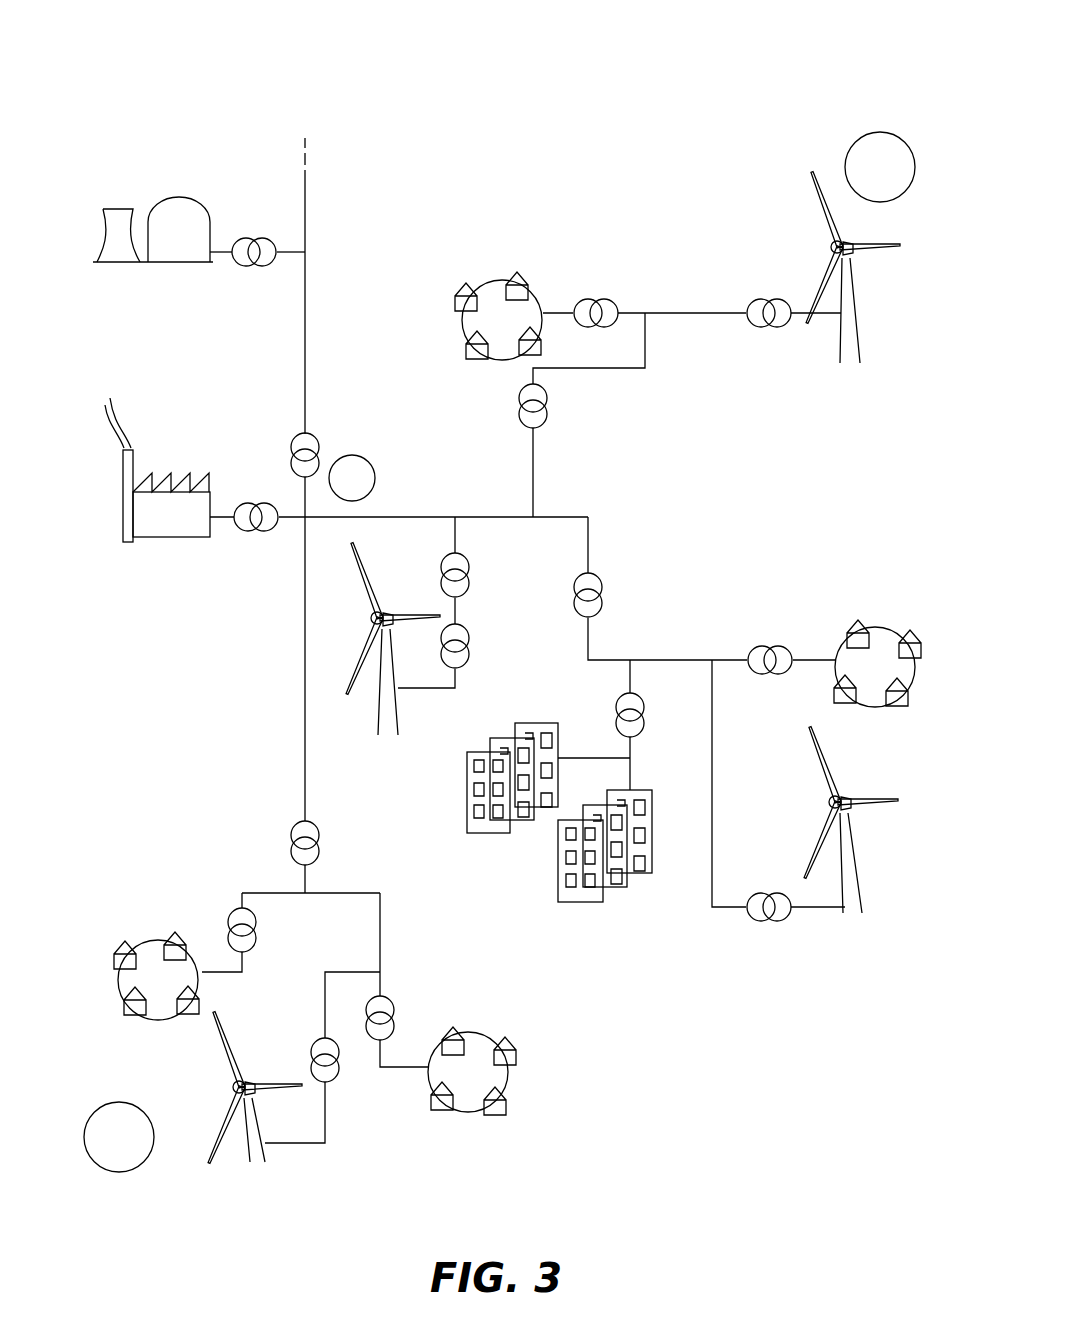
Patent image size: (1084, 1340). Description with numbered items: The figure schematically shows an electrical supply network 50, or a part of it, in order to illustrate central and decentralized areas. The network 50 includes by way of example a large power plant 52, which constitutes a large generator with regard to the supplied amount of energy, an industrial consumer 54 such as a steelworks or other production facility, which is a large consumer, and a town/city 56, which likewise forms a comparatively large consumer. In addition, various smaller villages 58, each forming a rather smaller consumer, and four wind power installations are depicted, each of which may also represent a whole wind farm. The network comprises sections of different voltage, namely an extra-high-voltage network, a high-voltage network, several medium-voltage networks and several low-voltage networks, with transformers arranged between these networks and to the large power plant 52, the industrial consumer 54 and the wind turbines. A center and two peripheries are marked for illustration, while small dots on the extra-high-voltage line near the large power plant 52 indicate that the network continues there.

The electrical supply network 50 is at (684, 106).
The large power plant 52 is at (160, 181).
The industrial consumer 54 is at (181, 440).
The town/city 56 is at (589, 924).
The villages 58 is at (486, 254).